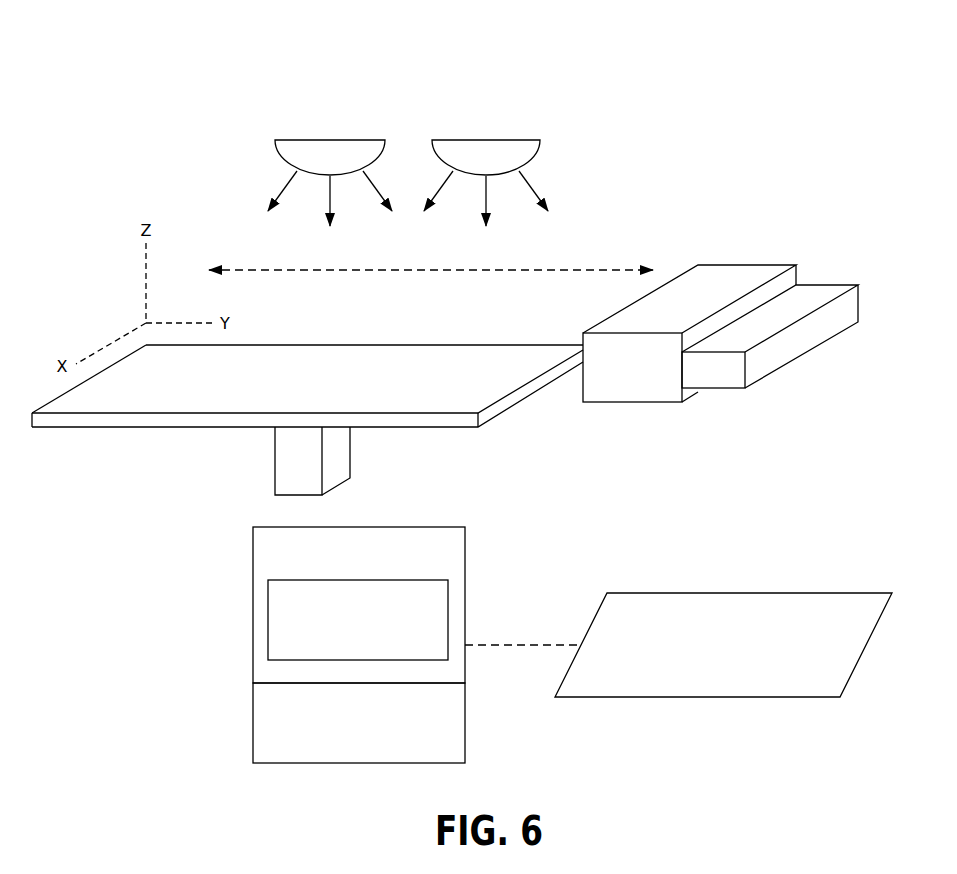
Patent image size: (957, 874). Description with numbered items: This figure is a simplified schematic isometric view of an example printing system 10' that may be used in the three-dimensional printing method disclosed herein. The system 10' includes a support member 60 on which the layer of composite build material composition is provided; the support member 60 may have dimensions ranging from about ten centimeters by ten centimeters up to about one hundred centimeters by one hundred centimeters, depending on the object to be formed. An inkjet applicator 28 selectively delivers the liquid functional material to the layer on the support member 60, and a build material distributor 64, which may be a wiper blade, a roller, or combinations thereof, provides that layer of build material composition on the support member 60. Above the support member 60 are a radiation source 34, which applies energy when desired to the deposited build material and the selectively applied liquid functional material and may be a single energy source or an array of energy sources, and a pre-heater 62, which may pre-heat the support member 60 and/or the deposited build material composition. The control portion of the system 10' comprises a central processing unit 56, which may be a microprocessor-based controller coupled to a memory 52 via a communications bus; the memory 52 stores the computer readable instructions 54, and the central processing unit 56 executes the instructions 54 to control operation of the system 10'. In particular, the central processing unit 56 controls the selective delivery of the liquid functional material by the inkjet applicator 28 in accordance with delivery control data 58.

The printing system 10' is at (689, 70).
The pre-heater 62 is at (330, 140).
The radiation source 34 is at (486, 140).
The support member 60 is at (363, 345).
The inkjet applicator 28 is at (744, 265).
The build material distributor 64 is at (827, 285).
The memory 52 is at (270, 553).
The computer readable instructions 54 is at (268, 617).
The central processing unit 56 is at (253, 720).
The delivery control data 58 is at (749, 593).